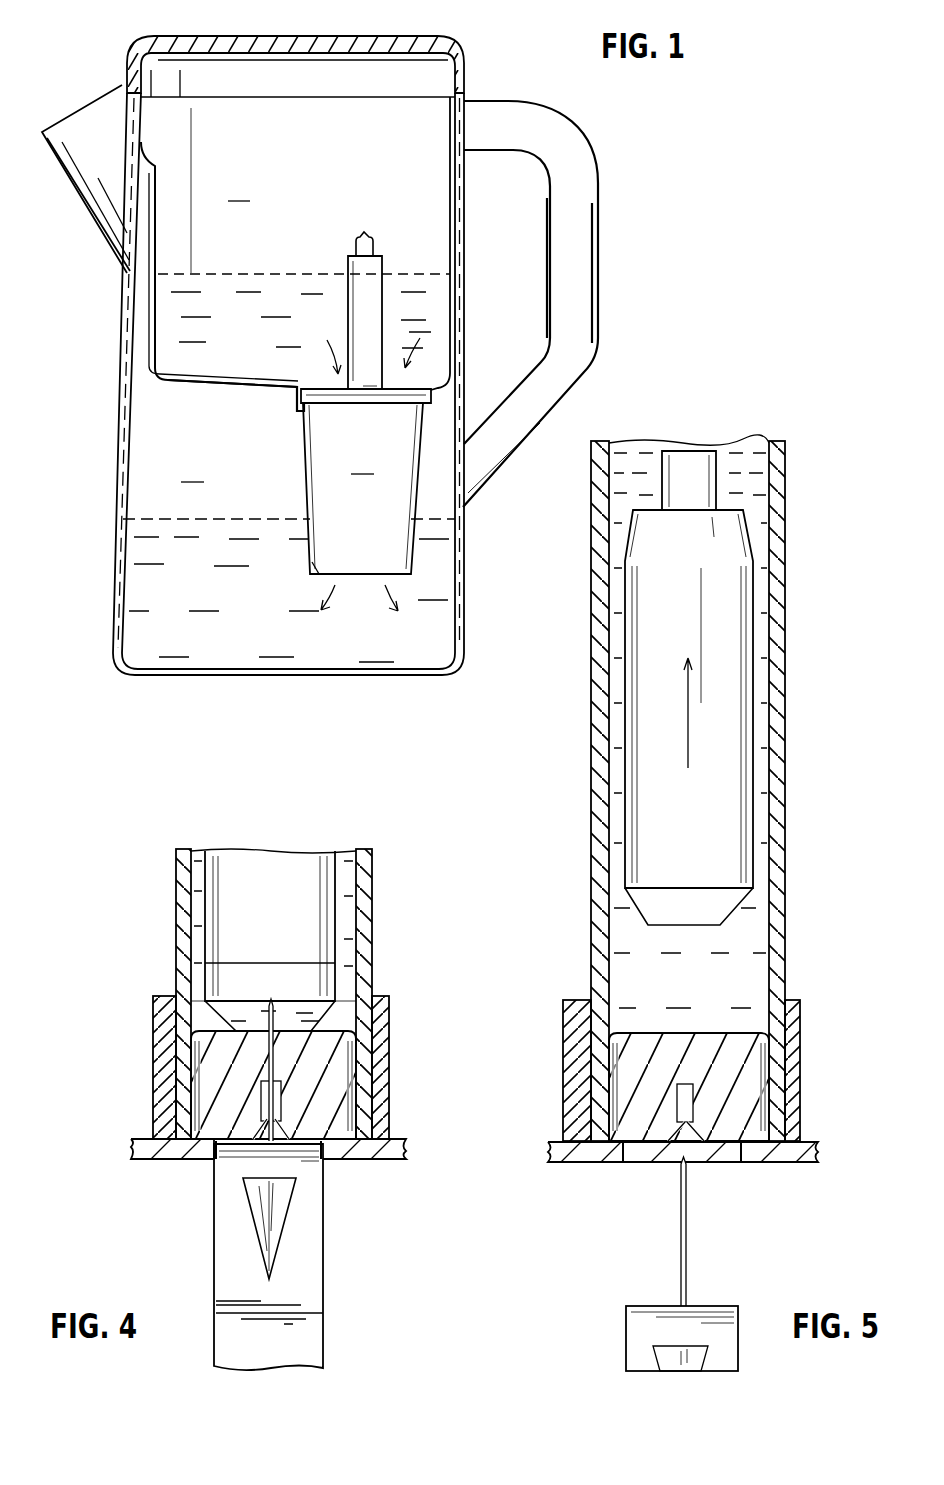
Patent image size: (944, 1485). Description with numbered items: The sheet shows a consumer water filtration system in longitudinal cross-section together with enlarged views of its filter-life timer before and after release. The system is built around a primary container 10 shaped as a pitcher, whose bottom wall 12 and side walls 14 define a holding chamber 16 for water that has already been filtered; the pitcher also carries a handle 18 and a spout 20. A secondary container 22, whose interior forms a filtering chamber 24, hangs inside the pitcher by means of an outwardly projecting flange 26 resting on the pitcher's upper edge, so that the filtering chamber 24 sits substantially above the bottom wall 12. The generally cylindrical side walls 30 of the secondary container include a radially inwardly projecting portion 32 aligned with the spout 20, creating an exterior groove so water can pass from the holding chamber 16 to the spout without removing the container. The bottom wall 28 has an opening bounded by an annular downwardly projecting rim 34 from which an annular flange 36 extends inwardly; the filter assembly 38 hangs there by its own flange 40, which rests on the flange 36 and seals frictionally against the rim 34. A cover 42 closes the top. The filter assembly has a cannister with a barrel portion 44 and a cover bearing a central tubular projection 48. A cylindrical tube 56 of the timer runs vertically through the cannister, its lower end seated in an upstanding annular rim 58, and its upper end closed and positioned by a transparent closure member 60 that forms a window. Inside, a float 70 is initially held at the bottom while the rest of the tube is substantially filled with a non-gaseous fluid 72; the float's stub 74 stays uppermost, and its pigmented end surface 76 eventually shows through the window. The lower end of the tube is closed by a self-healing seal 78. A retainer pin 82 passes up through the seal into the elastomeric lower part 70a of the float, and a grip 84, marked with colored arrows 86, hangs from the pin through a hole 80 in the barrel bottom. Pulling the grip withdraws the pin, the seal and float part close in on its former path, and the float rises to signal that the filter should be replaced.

In FIG. 1, the primary container 10 is at (289, 411).
In FIG. 1, the bottom wall 12 is at (241, 667).
In FIG. 1, the side walls 14 is at (113, 438).
In FIG. 1, the holding chamber 16 is at (289, 560).
In FIG. 1, the handle 18 is at (574, 242).
In FIG. 1, the spout 20 is at (69, 183).
In FIG. 1, the secondary container 22 is at (456, 231).
In FIG. 1, the filtering chamber 24 is at (258, 243).
In FIG. 1, the outwardly projecting flange 26 is at (354, 70).
In FIG. 1, the bottom wall 28 is at (235, 372).
In FIG. 1, the side walls 30 is at (456, 124).
In FIG. 1, the radially inwardly projecting portion 32 is at (138, 234).
In FIG. 1, the annular downwardly projecting rim 34 is at (423, 391).
In FIG. 1, the annular flange 36 is at (292, 398).
In FIG. 1, the filter assembly 38 is at (387, 508).
In FIG. 1, the flange 40 is at (355, 379).
In FIG. 1, the cover 42 is at (298, 28).
In FIG. 1, the barrel portion 44 is at (408, 497).
In FIG. 4, the barrel portion 44 is at (133, 1143).
In FIG. 5, the barrel portion 44 is at (811, 1146).
In FIG. 1, the tubular projection 48 is at (373, 284).
In FIG. 4, the cylindrical tube 56 is at (361, 886).
In FIG. 5, the cylindrical tube 56 is at (770, 593).
In FIG. 4, the upstanding annular rim 58 is at (372, 1045).
In FIG. 5, the upstanding annular rim 58 is at (783, 1036).
In FIG. 1, the transparent closure member 60 is at (356, 224).
In FIG. 4, the float 70 is at (318, 917).
In FIG. 5, the float 70 is at (737, 660).
In FIG. 4, the elastomeric lower part 70a is at (311, 983).
In FIG. 5, the elastomeric lower part 70a is at (719, 899).
In FIG. 4, the non-gaseous fluid 72 is at (181, 893).
In FIG. 5, the non-gaseous fluid 72 is at (743, 961).
In FIG. 5, the stub 74 is at (698, 471).
In FIG. 5, the end surface 76 is at (670, 443).
In FIG. 4, the self-healing seal 78 is at (338, 1090).
In FIG. 5, the self-healing seal 78 is at (630, 1121).
In FIG. 4, the hole 80 is at (208, 1153).
In FIG. 5, the hole 80 is at (728, 1154).
In FIG. 4, the retainer pin 82 is at (188, 1058).
In FIG. 5, the retainer pin 82 is at (681, 1259).
In FIG. 4, the grip 84 is at (294, 1257).
In FIG. 5, the grip 84 is at (618, 1333).
In FIG. 4, the arrows 86 is at (275, 1200).